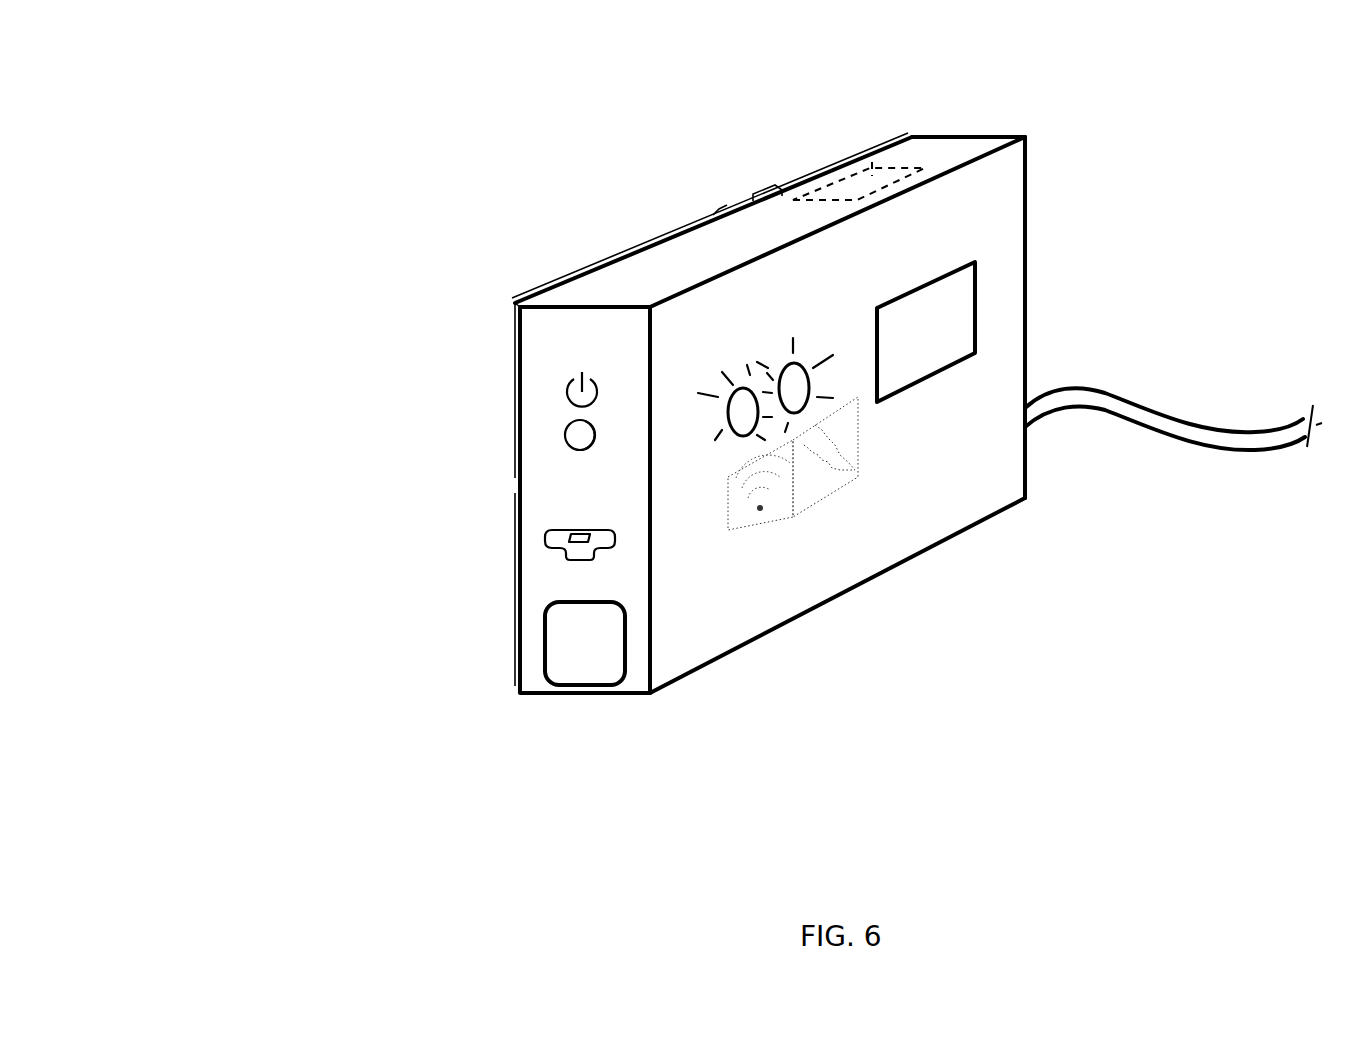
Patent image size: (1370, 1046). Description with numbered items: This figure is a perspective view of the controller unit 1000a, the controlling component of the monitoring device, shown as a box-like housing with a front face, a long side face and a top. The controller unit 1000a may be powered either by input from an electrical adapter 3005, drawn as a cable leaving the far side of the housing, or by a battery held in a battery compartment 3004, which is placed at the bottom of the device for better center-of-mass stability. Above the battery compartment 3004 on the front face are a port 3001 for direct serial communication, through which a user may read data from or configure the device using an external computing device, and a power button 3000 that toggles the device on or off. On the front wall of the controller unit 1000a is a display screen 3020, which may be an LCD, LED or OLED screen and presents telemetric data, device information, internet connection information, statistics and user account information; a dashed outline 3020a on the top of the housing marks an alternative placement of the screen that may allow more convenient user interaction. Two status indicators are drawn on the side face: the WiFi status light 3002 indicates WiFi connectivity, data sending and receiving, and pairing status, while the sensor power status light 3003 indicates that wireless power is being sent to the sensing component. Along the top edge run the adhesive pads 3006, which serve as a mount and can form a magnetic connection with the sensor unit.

The controller unit 1000a is at (995, 194).
The power button 3000 is at (572, 435).
The port 3001 is at (545, 540).
The WiFi status light 3002 is at (728, 410).
The sensor power status light 3003 is at (810, 386).
The battery compartment 3004 is at (552, 618).
The electrical adapter 3005 is at (1122, 404).
The adhesive pads 3006 is at (778, 190).
The display screen 3020 is at (935, 330).
The alternative placement of the screen 3020a is at (880, 145).